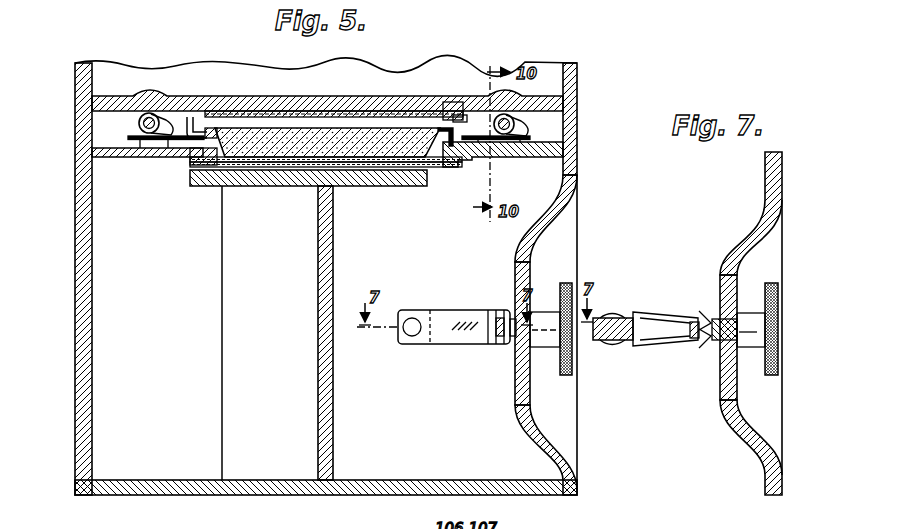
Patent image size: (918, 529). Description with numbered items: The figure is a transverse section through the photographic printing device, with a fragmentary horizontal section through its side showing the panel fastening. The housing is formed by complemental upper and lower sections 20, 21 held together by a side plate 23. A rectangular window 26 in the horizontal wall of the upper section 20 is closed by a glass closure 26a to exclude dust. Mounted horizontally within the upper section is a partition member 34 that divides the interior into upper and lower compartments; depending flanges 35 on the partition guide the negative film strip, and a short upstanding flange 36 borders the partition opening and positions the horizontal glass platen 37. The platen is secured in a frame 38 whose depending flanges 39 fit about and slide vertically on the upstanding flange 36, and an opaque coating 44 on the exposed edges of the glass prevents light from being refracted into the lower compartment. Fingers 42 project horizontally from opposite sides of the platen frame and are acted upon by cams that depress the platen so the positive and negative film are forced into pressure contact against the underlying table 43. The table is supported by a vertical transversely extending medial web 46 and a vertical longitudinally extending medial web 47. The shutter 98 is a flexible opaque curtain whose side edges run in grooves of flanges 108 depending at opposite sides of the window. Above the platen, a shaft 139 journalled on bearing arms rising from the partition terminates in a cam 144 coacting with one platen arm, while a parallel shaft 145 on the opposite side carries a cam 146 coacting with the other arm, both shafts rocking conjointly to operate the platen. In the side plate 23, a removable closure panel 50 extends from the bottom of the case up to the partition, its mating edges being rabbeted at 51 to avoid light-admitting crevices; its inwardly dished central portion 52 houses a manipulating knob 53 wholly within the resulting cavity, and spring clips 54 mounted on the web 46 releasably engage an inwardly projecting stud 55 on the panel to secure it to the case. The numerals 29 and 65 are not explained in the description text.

In FIG. 5, the upper section 20 is at (103, 96).
In FIG. 5, the lower section 21 is at (182, 493).
In FIG. 5, the side plate 23 is at (578, 126).
In FIG. 5, the window 26 is at (236, 100).
In FIG. 5, the glass closure 26a is at (272, 100).
In FIG. 5, the supporting plate 29 is at (208, 176).
In FIG. 5, the partition member 34 is at (112, 159).
In FIG. 5, the depending flanges 35 is at (190, 163).
In FIG. 5, the upstanding flange 36 is at (195, 166).
In FIG. 5, the glass platen 37 is at (363, 133).
In FIG. 5, the frame 38 is at (448, 128).
In FIG. 5, the depending flanges 39 is at (190, 122).
In FIG. 5, the fingers 42 is at (141, 149).
In FIG. 5, the table 43 is at (305, 190).
In FIG. 5, the opaque coating 44 is at (222, 182).
In FIG. 5, the transversely extending medial web 46 is at (222, 305).
In FIG. 5, the longitudinally extending medial web 47 is at (322, 325).
In FIG. 7, the longitudinally extending medial web 47 is at (626, 313).
In FIG. 5, the closure panel 50 is at (563, 450).
In FIG. 7, the closure panel 50 is at (778, 164).
In FIG. 5, the rabbeted mating edges 51 is at (577, 160).
In FIG. 5, the inwardly dished central portion 52 is at (529, 263).
In FIG. 7, the inwardly dished central portion 52 is at (738, 269).
In FIG. 5, the manipulating knob 53 is at (571, 361).
In FIG. 7, the manipulating knob 53 is at (780, 371).
In FIG. 5, the spring clips 54 is at (480, 338).
In FIG. 7, the spring clips 54 is at (668, 341).
In FIG. 5, the stud 55 is at (494, 318).
In FIG. 7, the stud 55 is at (695, 343).
In FIG. 5, the strip 65 is at (453, 170).
In FIG. 5, the shutter 98 is at (325, 112).
In FIG. 5, the flanges 108 is at (209, 128).
In FIG. 5, the shaft 139 is at (530, 105).
In FIG. 5, the cam 144 is at (524, 131).
In FIG. 5, the shaft 145 is at (149, 115).
In FIG. 5, the cam 146 is at (168, 118).